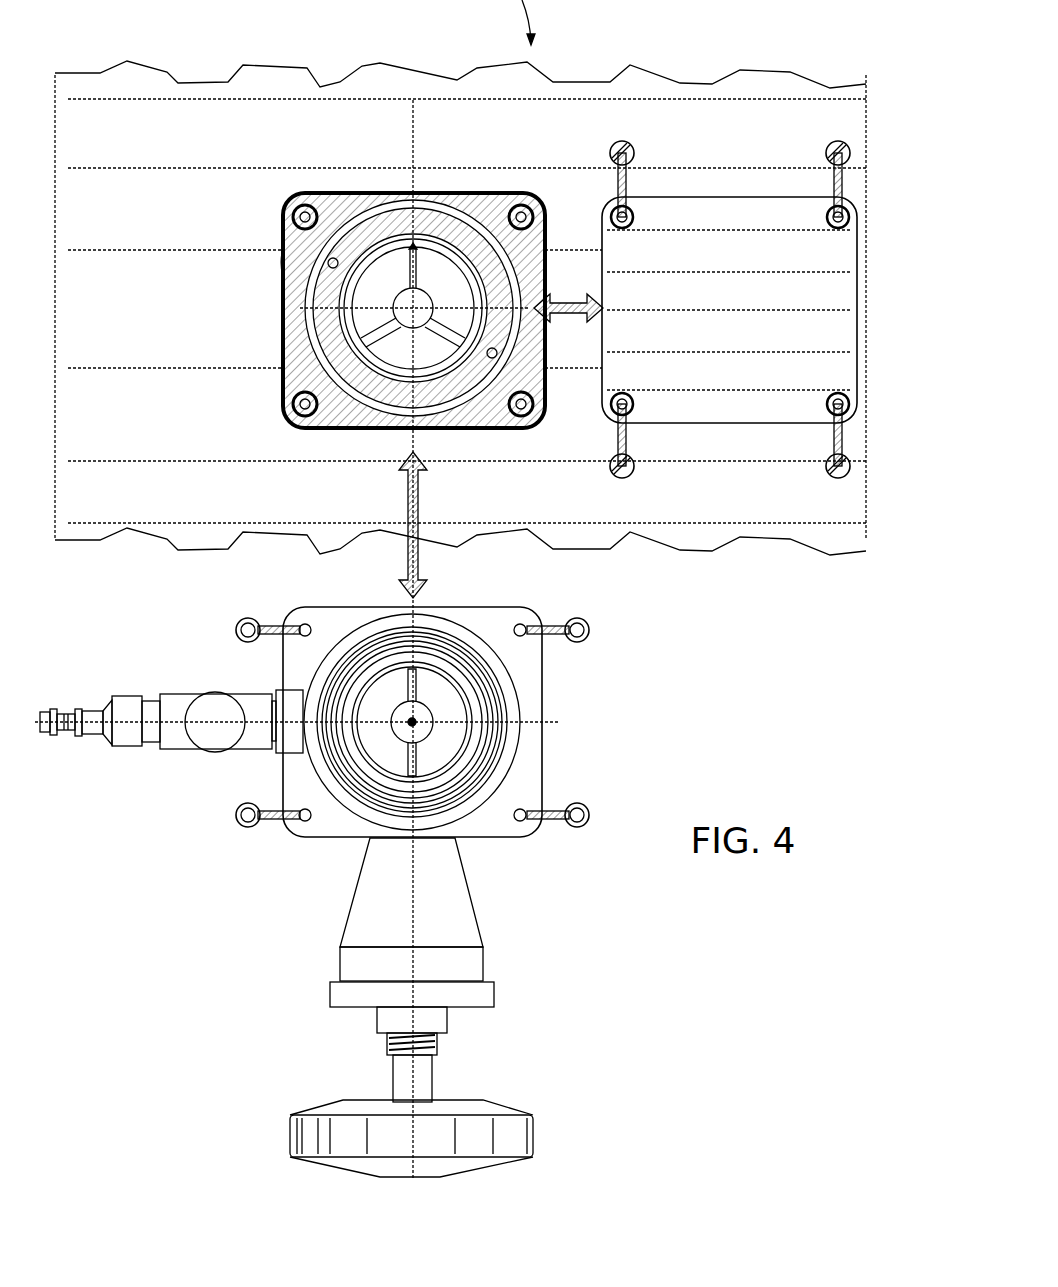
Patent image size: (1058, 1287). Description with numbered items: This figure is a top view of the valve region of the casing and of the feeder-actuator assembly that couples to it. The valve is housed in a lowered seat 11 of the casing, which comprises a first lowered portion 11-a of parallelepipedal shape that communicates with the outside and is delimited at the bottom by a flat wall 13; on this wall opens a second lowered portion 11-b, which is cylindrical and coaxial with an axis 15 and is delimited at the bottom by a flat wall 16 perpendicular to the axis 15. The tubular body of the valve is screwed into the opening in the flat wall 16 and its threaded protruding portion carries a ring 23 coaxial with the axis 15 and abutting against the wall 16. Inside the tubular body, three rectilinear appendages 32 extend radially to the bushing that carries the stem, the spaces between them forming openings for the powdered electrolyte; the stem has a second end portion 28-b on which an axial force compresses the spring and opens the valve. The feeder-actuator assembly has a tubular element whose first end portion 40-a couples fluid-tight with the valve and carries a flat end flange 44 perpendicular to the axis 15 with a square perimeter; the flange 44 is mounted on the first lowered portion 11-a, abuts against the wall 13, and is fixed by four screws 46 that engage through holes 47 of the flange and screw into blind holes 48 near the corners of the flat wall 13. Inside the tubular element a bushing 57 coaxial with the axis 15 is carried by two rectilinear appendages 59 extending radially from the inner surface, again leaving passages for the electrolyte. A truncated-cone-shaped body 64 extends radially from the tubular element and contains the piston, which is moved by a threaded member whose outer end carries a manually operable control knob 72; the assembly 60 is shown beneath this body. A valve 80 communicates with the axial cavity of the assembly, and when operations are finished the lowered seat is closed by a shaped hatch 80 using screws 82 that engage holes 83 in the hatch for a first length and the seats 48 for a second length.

The lowered seat 11 is at (335, 203).
The first lowered portion 11-a is at (298, 279).
The second lowered portion 11-b is at (435, 236).
The ring 23 is at (372, 240).
The flat wall 16 is at (512, 270).
The axis 15 is at (413, 308).
The rectilinear appendages 32 is at (416, 277).
The blind holes 48 is at (303, 212).
The flat wall 13 is at (330, 410).
The second end portion of the stem 28-b is at (413, 335).
The shaped hatch 80 is at (728, 250).
The screws 82 is at (632, 145).
The holes 83 is at (632, 226).
The flat end flange 44 is at (545, 712).
The first end portion of the tubular element 40-a is at (325, 834).
The bushing 57 is at (422, 735).
The rectilinear appendages 59 is at (404, 692).
The through holes 47 is at (300, 635).
The screws 46 is at (242, 620).
The truncated-cone-shaped body 64 is at (486, 928).
The base assembly 60 is at (520, 989).
The manually operable control knob 72 is at (515, 1132).